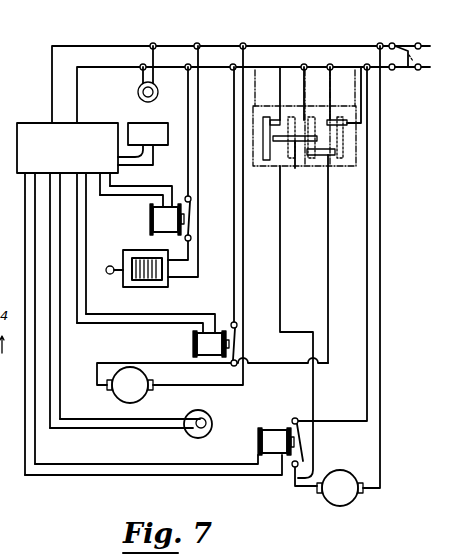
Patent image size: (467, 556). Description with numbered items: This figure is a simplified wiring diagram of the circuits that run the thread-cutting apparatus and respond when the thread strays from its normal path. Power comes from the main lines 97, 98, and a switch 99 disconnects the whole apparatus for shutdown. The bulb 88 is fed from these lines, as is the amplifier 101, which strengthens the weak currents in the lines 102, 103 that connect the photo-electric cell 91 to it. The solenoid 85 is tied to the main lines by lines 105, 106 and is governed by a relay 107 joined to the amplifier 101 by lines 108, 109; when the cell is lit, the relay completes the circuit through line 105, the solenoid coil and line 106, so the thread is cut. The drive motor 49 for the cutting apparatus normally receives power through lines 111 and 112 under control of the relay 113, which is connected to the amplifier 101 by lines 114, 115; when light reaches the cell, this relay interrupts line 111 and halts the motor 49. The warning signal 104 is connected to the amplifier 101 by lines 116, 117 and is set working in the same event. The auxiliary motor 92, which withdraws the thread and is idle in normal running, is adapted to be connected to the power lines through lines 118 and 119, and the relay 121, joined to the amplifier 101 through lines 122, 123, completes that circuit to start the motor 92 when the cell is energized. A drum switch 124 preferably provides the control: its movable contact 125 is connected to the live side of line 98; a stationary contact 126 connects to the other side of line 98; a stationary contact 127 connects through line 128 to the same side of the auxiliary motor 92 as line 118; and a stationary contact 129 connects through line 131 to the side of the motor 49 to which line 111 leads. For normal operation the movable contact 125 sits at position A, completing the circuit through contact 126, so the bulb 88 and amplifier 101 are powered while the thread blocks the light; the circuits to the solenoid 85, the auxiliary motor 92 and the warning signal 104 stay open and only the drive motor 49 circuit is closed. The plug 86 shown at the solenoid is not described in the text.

The drive motor 49 is at (114, 398).
The solenoid 85 is at (144, 282).
The plug connector 86 is at (113, 266).
The bulb 88 is at (138, 91).
The photo-electric cell 91 is at (157, 123).
The auxiliary motor 92 is at (333, 497).
The main line 97 is at (280, 45).
The main line 98 is at (342, 66).
The switch 99 is at (398, 43).
The amplifier 101 is at (44, 162).
The line 102 is at (128, 156).
The line 103 is at (154, 165).
The warning signal 104 is at (192, 436).
The line 105 is at (200, 196).
The line 106 is at (198, 274).
The relay 107 is at (162, 229).
The line 108 is at (100, 196).
The line 109 is at (136, 197).
The line 111 is at (238, 289).
The line 112 is at (245, 382).
The relay 113 is at (192, 343).
The line 114 is at (92, 324).
The line 115 is at (114, 316).
The line 116 is at (105, 430).
The line 117 is at (135, 419).
The line 118 is at (367, 256).
The line 119 is at (381, 312).
The relay 121 is at (258, 436).
The line 122 is at (107, 475).
The line 123 is at (232, 476).
The drum switch 124 is at (356, 140).
The movable contact 125 is at (265, 166).
The stationary contact 126 is at (262, 126).
The stationary contact 127 is at (298, 169).
The line 128 is at (283, 325).
The stationary contact 129 is at (333, 168).
The line 131 is at (330, 355).